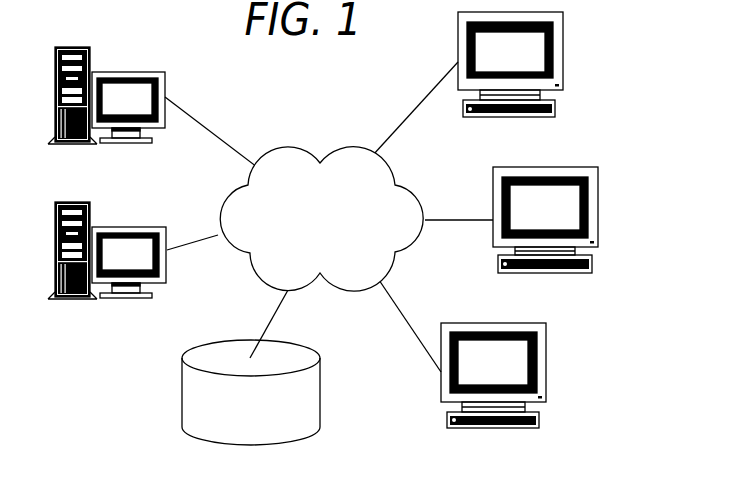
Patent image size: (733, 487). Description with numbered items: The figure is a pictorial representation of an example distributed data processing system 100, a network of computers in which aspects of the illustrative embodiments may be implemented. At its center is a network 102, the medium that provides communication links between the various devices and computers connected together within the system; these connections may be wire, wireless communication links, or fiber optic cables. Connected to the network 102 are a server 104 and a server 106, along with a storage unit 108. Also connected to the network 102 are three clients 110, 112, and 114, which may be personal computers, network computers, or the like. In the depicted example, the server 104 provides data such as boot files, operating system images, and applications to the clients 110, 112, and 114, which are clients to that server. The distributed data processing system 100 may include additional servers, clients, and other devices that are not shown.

The distributed data processing system 100 is at (135, 373).
The network 102 is at (288, 150).
The server 104 is at (128, 72).
The server 106 is at (128, 227).
The storage unit 108 is at (320, 385).
The client 110 is at (563, 55).
The client 112 is at (598, 210).
The client 114 is at (546, 368).